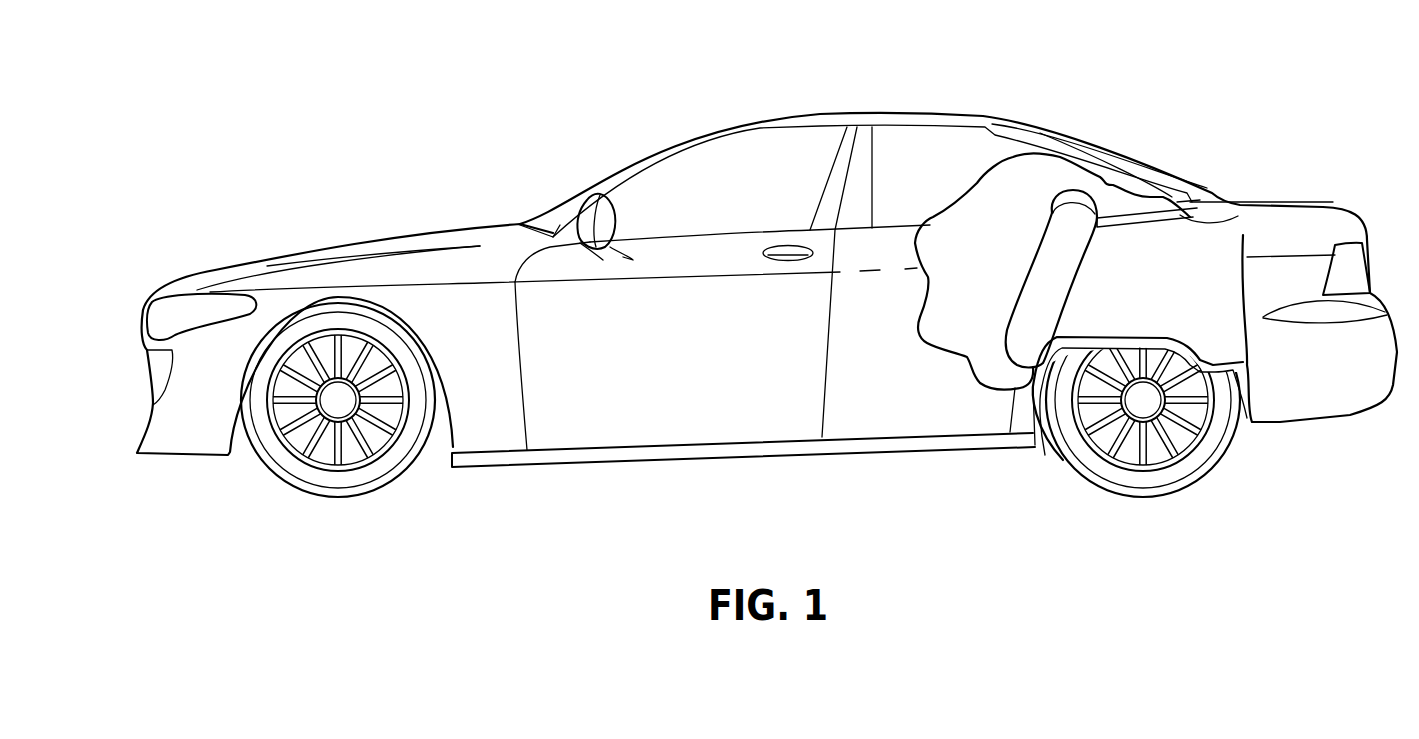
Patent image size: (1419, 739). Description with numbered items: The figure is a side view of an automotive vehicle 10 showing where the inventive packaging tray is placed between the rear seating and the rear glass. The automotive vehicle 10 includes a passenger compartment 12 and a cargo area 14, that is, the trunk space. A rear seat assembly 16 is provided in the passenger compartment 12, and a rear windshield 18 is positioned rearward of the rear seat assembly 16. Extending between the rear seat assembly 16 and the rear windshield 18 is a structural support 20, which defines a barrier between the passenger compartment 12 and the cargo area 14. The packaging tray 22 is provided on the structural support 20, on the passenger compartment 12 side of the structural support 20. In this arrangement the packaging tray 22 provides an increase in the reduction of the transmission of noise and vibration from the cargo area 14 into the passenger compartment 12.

The automotive vehicle 10 is at (455, 175).
The passenger compartment 12 is at (1030, 177).
The cargo area 14 is at (1187, 255).
The rear seat assembly 16 is at (987, 275).
The rear windshield 18 is at (1168, 174).
The structural support 20 is at (1243, 233).
The packaging tray 22 is at (1118, 203).